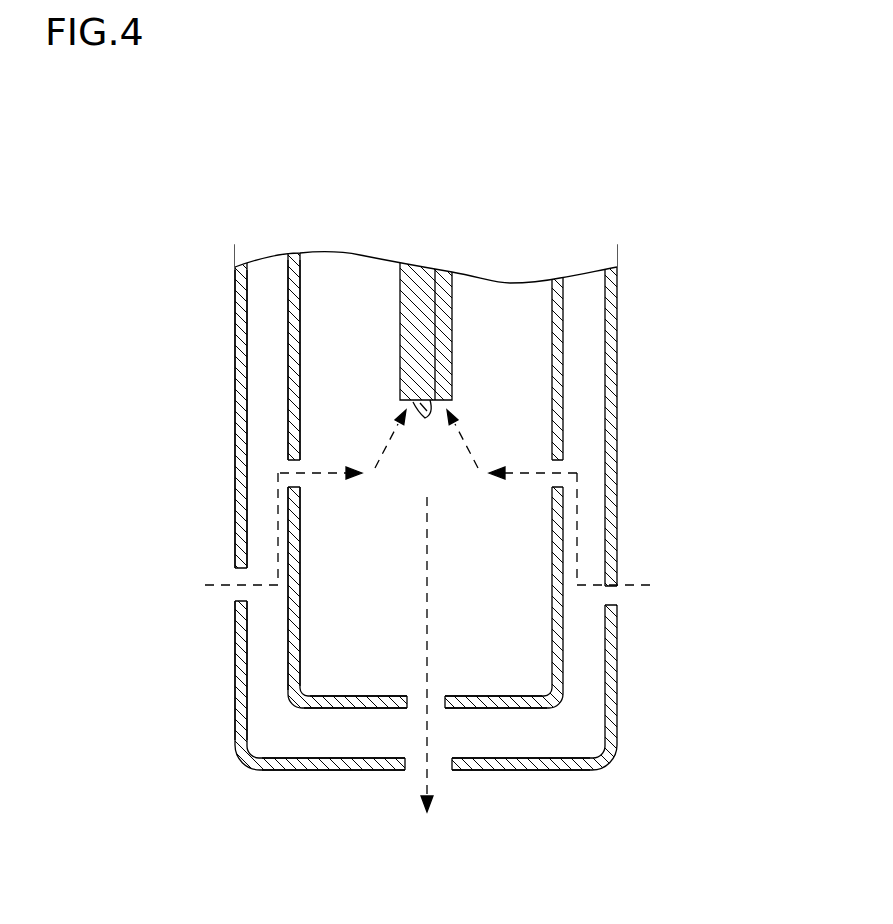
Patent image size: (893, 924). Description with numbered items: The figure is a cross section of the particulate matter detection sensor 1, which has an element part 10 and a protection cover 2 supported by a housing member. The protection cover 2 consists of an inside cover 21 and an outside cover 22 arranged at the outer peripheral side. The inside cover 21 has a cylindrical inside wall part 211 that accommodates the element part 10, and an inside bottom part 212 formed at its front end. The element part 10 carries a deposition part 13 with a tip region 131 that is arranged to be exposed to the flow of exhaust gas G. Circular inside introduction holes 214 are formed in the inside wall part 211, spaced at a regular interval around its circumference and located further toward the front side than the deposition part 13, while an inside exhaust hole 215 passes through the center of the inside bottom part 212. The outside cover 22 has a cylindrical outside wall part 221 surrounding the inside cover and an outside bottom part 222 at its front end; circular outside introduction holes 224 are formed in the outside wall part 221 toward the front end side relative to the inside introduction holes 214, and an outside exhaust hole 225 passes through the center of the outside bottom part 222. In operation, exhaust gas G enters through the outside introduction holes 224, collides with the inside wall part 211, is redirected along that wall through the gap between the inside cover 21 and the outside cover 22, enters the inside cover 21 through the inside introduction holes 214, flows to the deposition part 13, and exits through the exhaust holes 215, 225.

The particulate matter detection sensor 1 is at (419, 508).
The protection cover 2 is at (419, 566).
The element part 10 is at (552, 313).
The deposition part 13 is at (462, 313).
The electrode tip 131 is at (433, 272).
The inside cover 21 is at (431, 538).
The outside cover 22 is at (416, 566).
The inside wall part 211 is at (292, 345).
The inside bottom part 212 is at (357, 708).
The inside introduction holes 214 is at (293, 463).
The inside exhaust hole 215 is at (437, 709).
The outside wall part 221 is at (237, 633).
The outside bottom part 222 is at (297, 771).
The outside introduction holes 224 is at (237, 570).
The outside exhaust hole 225 is at (412, 771).
The exhaust gas G is at (278, 515).